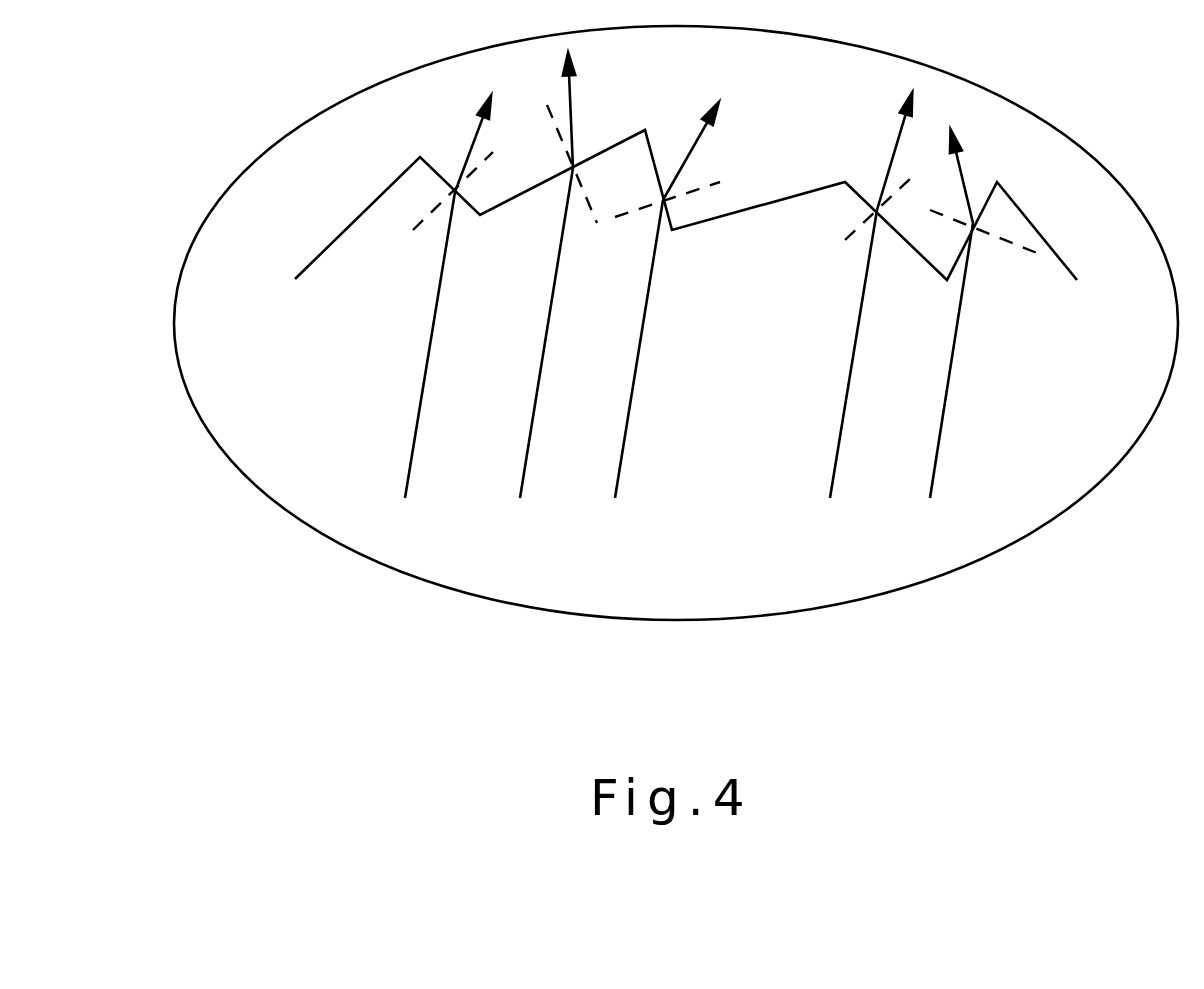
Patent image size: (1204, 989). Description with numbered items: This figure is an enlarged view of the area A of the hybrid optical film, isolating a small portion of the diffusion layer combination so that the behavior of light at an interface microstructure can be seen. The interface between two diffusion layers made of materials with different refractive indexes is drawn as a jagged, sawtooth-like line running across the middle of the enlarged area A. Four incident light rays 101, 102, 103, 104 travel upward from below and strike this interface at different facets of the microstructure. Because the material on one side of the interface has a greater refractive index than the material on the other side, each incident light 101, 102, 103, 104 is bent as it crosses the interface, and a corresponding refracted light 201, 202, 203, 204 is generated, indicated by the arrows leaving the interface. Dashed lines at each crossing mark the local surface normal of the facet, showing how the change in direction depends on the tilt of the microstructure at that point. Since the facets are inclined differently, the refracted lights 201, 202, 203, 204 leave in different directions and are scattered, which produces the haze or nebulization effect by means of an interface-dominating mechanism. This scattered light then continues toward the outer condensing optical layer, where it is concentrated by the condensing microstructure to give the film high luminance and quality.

The area A is at (158, 123).
The incident light 101 is at (442, 369).
The incident light 102 is at (561, 362).
The incident light 103 is at (669, 378).
The incident light 104 is at (871, 383).
The refracted light 201 is at (441, 161).
The refracted light 202 is at (596, 133).
The refracted light 203 is at (700, 132).
The refracted light 204 is at (871, 165).